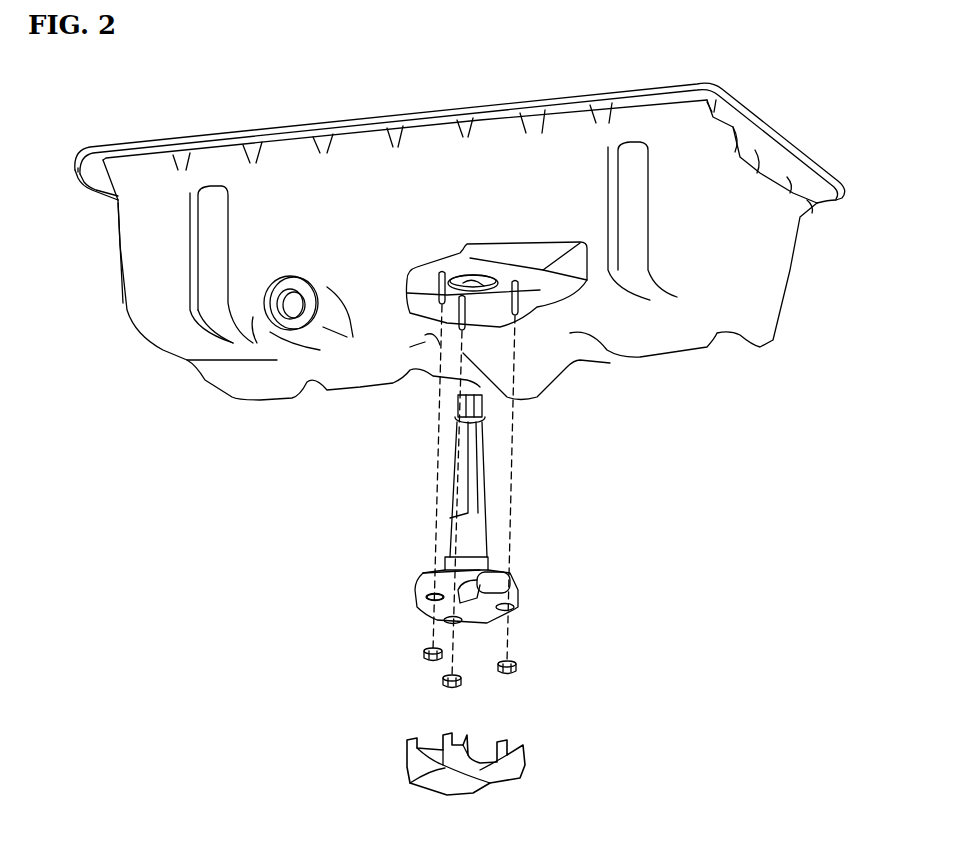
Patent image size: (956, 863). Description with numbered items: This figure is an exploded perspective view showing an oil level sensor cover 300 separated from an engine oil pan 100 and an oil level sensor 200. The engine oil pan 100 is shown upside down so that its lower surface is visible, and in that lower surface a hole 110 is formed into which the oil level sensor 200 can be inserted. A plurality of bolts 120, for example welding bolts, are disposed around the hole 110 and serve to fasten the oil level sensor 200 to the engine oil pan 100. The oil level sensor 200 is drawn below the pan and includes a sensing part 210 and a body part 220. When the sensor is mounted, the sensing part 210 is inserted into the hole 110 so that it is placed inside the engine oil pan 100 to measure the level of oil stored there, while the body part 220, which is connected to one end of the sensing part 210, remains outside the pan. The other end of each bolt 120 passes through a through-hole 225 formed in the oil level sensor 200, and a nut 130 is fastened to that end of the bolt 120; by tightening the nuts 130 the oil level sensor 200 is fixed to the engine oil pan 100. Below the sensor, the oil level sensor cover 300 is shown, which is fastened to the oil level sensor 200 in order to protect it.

The engine oil pan 100 is at (720, 368).
The hole 110 is at (442, 303).
The bolts 120 is at (516, 301).
The nut 130 is at (516, 667).
The oil level sensor 200 is at (488, 524).
The sensing part 210 is at (472, 452).
The body part 220 is at (425, 582).
The through-hole 225 is at (417, 608).
The oil level sensor cover 300 is at (543, 775).